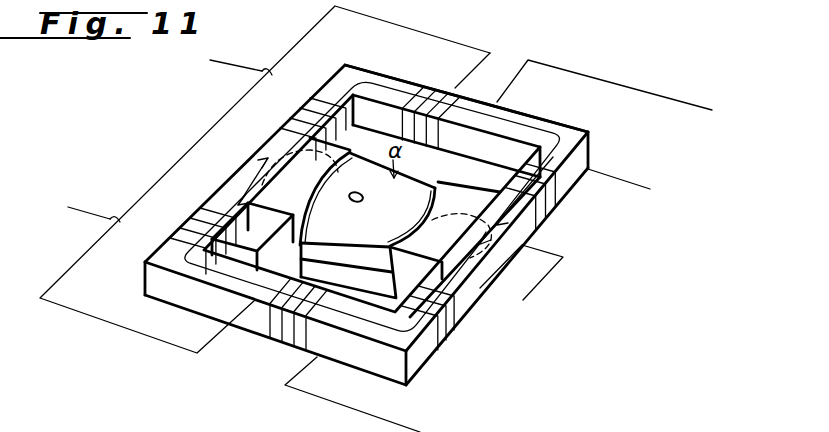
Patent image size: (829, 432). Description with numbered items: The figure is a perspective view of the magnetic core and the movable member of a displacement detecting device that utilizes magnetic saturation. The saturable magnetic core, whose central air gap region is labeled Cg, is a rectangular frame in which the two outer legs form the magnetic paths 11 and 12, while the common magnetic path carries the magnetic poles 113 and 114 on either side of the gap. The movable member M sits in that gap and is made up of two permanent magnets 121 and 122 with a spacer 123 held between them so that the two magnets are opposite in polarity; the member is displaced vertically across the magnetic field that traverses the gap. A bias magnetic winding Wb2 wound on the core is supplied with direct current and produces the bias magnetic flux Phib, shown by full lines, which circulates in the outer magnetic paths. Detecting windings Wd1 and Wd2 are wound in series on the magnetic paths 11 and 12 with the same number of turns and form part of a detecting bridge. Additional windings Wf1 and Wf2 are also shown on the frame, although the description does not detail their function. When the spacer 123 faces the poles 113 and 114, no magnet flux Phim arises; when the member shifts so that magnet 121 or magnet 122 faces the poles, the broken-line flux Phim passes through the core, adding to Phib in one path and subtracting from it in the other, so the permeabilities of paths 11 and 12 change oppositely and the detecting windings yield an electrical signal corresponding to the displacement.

The magnetic path 11 is at (466, 78).
The magnetic path 12 is at (150, 285).
The magnetic pole 113 is at (340, 181).
The magnetic pole 114 is at (444, 209).
The permanent magnet 121 is at (340, 243).
The permanent magnet 122 is at (350, 276).
The spacer 123 is at (385, 300).
The rear arm winding Wf1 is at (433, 98).
The front arm winding Wf2 is at (274, 335).
The detecting winding Wd1 is at (561, 198).
The detecting winding Wd2 is at (243, 179).
The bias magnetic winding Wb2 is at (456, 337).
The movable member M is at (368, 224).
The magnetic core with air gap Cg is at (282, 268).
The bias magnetic flux Phib is at (488, 320).
The magnetic flux from movable member Phim is at (376, 204).